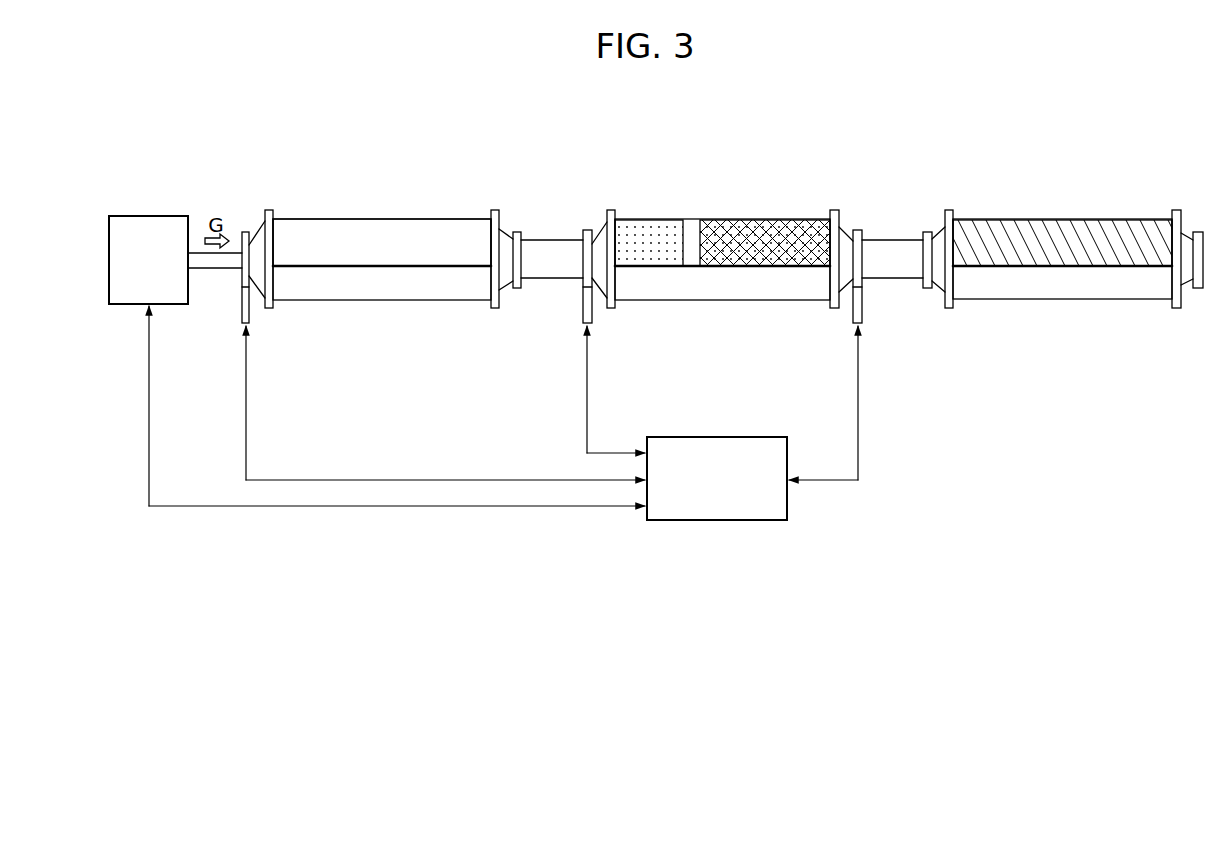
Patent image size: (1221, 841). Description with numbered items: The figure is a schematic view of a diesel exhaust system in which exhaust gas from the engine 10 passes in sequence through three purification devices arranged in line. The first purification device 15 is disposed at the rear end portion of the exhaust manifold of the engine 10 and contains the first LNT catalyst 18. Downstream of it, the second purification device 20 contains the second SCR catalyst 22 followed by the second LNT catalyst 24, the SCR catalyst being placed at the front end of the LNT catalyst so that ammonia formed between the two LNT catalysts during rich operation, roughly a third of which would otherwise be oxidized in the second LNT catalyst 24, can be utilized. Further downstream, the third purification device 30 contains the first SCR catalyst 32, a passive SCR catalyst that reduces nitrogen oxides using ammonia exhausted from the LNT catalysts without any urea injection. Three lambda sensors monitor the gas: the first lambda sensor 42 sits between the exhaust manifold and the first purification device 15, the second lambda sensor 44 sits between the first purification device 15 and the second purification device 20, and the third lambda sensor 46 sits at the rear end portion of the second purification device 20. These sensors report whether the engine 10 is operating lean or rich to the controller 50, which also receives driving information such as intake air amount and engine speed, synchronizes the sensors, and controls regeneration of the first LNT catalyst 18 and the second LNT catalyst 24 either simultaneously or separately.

The engine 10 is at (164, 215).
The first purification device 15 is at (439, 288).
The first LNT catalyst 18 is at (436, 230).
The second purification device 20 is at (767, 287).
The second SCR catalyst 22 is at (645, 228).
The second LNT catalyst 24 is at (763, 227).
The third purification device 30 is at (1092, 287).
The first SCR catalyst 32 is at (1050, 228).
The first lambda sensor 42 is at (250, 318).
The second lambda sensor 44 is at (580, 308).
The third lambda sensor 46 is at (863, 308).
The controller 50 is at (718, 522).